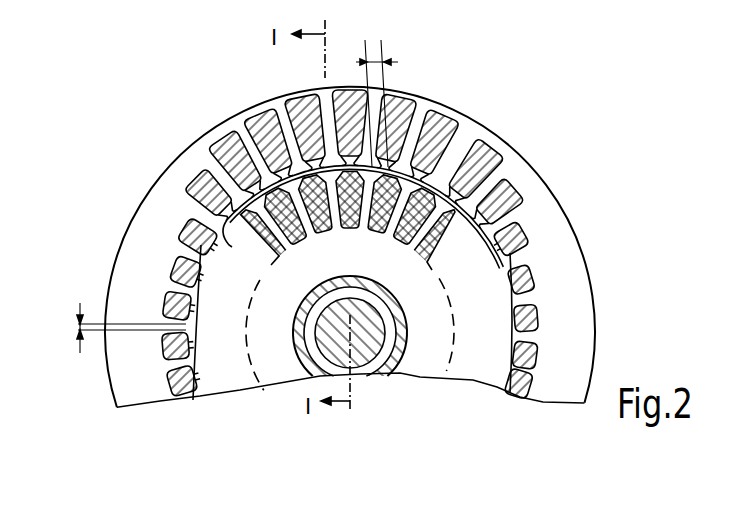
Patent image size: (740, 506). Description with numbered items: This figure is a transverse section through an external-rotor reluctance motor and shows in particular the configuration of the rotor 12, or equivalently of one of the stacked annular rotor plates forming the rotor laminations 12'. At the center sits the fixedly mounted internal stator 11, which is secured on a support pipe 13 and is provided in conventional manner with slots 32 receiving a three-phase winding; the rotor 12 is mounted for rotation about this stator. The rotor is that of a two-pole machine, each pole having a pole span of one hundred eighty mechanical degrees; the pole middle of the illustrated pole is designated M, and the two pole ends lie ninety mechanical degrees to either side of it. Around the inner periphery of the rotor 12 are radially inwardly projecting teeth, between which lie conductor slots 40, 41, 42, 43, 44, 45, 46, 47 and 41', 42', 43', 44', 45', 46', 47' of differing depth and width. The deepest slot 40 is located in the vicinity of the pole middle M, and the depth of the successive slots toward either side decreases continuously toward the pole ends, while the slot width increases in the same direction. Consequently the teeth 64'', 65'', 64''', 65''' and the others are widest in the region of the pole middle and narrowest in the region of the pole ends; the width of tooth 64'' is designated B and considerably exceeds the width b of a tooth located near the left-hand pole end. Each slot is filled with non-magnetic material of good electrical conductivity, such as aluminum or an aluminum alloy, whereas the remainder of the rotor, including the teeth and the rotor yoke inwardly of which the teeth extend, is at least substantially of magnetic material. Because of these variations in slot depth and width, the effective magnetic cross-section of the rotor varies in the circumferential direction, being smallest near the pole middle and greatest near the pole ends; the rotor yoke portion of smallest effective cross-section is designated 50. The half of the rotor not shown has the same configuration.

The stator 11 is at (232, 247).
The rotor 12 is at (376, 247).
The rotor laminations 12' is at (583, 323).
The support pipe 13 is at (390, 362).
The slots 32 is at (380, 233).
The deepest slot 40 is at (400, 112).
The conductor slot 41 is at (247, 113).
The conductor slot 41' is at (451, 114).
The conductor slot 42 is at (222, 129).
The conductor slot 42' is at (474, 126).
The conductor slot 43 is at (185, 159).
The conductor slot 43' is at (509, 152).
The conductor slot 44 is at (161, 183).
The conductor slot 44' is at (535, 175).
The conductor slot 45 is at (132, 237).
The conductor slot 45' is at (559, 209).
The conductor slot 46 is at (123, 270).
The conductor slot 46' is at (585, 278).
The conductor slot 47 is at (116, 299).
The conductor slot 47' is at (582, 351).
The rotor yoke portion 50 is at (348, 78).
The tooth 64'' is at (282, 100).
The tooth 64''' is at (421, 63).
The tooth 65'' is at (210, 88).
The tooth 65''' is at (486, 90).
The tooth width b is at (78, 327).
The tooth width B is at (378, 91).
The pole middle M is at (337, 212).